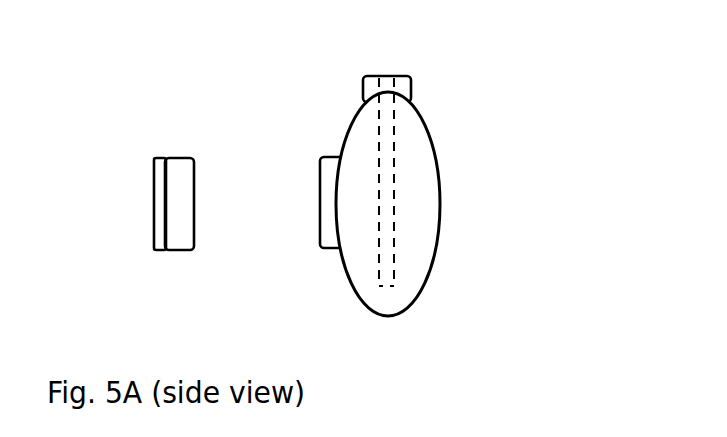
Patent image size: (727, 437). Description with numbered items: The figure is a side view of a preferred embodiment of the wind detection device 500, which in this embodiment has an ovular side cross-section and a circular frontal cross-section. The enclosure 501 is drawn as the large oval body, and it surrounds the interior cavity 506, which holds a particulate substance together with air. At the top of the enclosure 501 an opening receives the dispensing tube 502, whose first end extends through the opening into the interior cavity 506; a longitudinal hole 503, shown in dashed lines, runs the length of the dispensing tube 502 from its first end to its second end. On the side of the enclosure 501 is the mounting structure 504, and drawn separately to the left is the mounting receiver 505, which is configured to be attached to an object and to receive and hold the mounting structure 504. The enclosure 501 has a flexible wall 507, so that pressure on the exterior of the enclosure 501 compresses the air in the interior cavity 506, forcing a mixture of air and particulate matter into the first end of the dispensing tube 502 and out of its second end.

The wind detection device 500 is at (523, 291).
The enclosure 501 is at (441, 203).
The dispensing tube 502 is at (363, 84).
The longitudinal hole 503 is at (395, 180).
The mounting structure 504 is at (320, 203).
The mounting receiver 505 is at (141, 176).
The interior cavity 506 is at (415, 143).
The flexible wall 507 is at (197, 203).